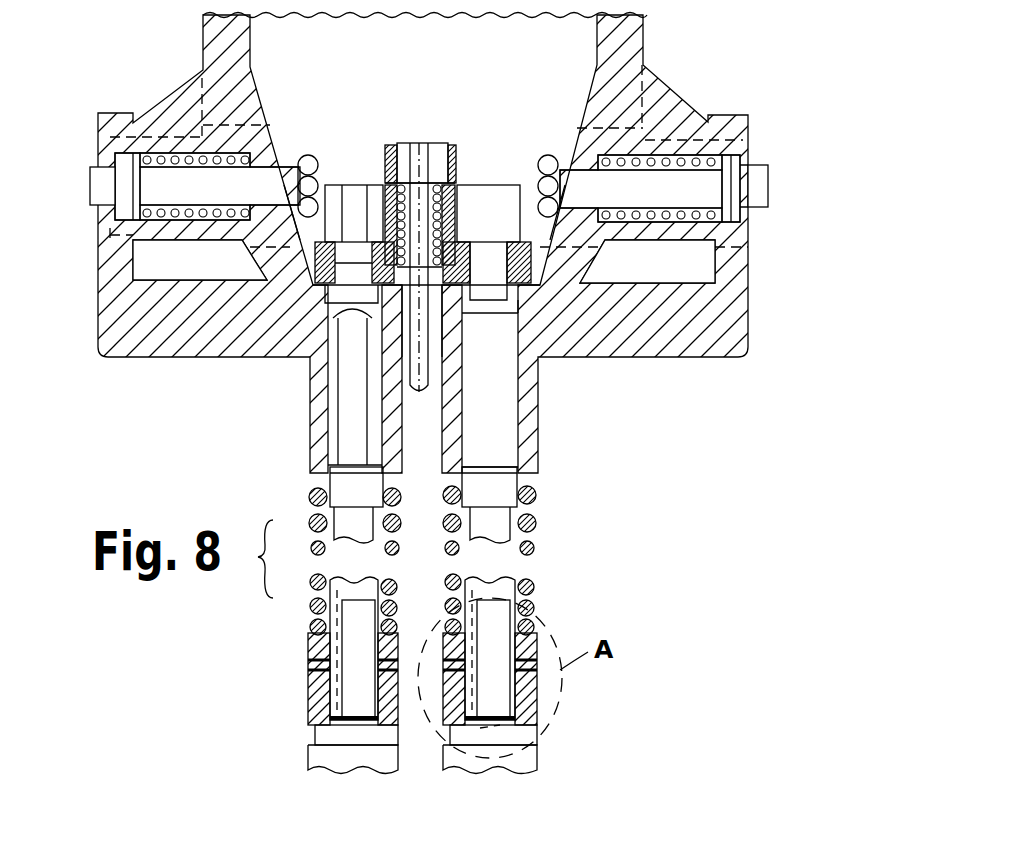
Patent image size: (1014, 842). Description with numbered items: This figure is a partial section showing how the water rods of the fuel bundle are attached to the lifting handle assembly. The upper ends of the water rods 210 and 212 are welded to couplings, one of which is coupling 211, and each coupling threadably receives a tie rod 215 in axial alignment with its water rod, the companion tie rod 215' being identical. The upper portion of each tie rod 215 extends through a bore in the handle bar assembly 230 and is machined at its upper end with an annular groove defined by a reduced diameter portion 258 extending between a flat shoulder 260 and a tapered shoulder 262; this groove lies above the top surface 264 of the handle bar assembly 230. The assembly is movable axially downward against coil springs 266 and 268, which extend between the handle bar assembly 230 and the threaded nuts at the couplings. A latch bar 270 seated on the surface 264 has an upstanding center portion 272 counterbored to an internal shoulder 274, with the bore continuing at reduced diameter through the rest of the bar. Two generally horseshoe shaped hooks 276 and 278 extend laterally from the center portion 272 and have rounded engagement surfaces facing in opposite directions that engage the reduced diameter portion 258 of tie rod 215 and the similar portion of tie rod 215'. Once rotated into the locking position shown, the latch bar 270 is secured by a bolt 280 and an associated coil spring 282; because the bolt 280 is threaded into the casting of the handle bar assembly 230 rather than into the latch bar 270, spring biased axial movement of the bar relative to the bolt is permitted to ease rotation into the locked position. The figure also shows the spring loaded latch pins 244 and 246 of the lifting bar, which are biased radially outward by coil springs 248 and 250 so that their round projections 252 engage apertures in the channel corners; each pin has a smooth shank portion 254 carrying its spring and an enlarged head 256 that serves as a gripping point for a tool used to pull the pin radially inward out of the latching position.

The handle bar assembly 230 is at (697, 54).
The spring loaded latch pin 244 is at (285, 165).
The spring loaded latch pin 246 is at (577, 164).
The coil spring 248 is at (203, 198).
The coil spring 250 is at (627, 213).
The round projection 252 is at (92, 195).
The smooth shank portion 254 is at (247, 246).
The enlarged head 256 is at (322, 190).
The reduced diameter portion 258 is at (490, 292).
The flat shoulder 260 is at (461, 240).
The tapered shoulder 262 is at (490, 430).
The top surface 264 is at (470, 290).
The coil spring 266 is at (312, 600).
The coil spring 268 is at (543, 593).
The latch bar 270 is at (450, 170).
The upstanding center portion 272 is at (391, 142).
The internal shoulder 274 is at (305, 268).
The horseshoe shaped hook 276 is at (322, 250).
The horseshoe shaped hook 278 is at (500, 270).
The bolt 280 is at (412, 165).
The coil spring 282 is at (455, 210).
The water rod 210 is at (380, 760).
The coupling 211 is at (310, 698).
The water rod 212 is at (508, 757).
The tie rod 215 is at (541, 511).
The tie rod 215' is at (314, 511).